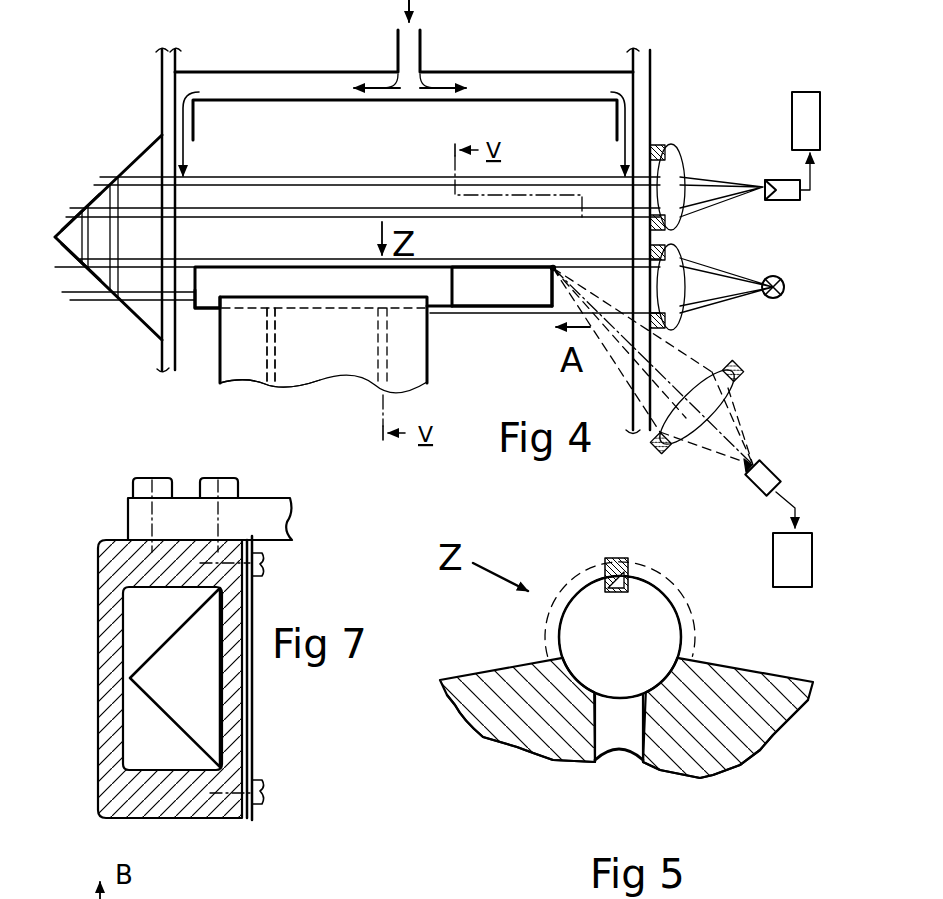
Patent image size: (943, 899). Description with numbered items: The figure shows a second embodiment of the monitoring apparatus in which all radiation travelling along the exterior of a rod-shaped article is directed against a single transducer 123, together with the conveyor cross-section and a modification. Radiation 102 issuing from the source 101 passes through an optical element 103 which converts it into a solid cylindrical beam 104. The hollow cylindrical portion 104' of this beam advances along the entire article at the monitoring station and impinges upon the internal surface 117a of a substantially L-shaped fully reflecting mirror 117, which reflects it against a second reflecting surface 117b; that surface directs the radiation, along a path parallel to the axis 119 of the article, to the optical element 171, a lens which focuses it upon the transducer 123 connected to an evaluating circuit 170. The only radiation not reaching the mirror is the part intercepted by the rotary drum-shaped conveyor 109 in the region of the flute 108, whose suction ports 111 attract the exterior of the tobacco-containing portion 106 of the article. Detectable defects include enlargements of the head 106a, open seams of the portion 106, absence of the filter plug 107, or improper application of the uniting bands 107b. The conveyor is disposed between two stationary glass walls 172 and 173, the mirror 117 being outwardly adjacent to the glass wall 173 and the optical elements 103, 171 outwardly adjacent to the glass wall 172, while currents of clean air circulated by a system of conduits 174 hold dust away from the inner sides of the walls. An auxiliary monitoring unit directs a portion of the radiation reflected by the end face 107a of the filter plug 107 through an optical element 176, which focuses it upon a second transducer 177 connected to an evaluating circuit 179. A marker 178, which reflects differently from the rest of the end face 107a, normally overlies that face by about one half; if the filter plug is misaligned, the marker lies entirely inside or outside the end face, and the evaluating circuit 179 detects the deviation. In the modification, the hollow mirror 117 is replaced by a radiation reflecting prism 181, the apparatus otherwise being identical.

In FIG. 4, the fully reflecting mirror 117 is at (72, 108).
In FIG. 4, the internal surface of mirror 117a is at (100, 270).
In FIG. 4, the second reflecting surface 117b is at (86, 206).
In FIG. 4, the glass wall 173 is at (160, 80).
In FIG. 4, the glass wall 172 is at (651, 78).
In FIG. 4, the conduits 174 is at (218, 80).
In FIG. 4, the hollow cylindrical portion of the beam 104' is at (357, 242).
In FIG. 4, the tobacco-containing portion 106 is at (222, 280).
In FIG. 4, the head of tobacco-containing portion 106a is at (192, 305).
In FIG. 4, the flute 108 is at (405, 308).
In FIG. 5, the flute 108 is at (676, 676).
In FIG. 4, the rotary drum-shaped conveyor 109 is at (226, 386).
In FIG. 5, the rotary drum-shaped conveyor 109 is at (754, 722).
In FIG. 4, the suction ports 111 is at (268, 386).
In FIG. 5, the suction ports 111 is at (617, 748).
In FIG. 4, the filter plug 107 is at (502, 286).
In FIG. 5, the filter plug 107 is at (640, 600).
In FIG. 4, the end face of filter plug 107a is at (553, 308).
In FIG. 5, the end face of filter plug 107a is at (647, 605).
In FIG. 4, the uniting bands 107b is at (467, 298).
In FIG. 4, the marker 178 is at (556, 268).
In FIG. 5, the marker 178 is at (612, 562).
In FIG. 4, the solid cylindrical beam 104 is at (653, 366).
In FIG. 4, the optical element 171 is at (673, 165).
In FIG. 4, the transducer 123 is at (793, 202).
In FIG. 4, the evaluating circuit 170 is at (806, 95).
In FIG. 4, the optical element 103 is at (672, 318).
In FIG. 4, the radiation 102 is at (716, 272).
In FIG. 4, the source 101 is at (785, 292).
In FIG. 4, the optical element 176 is at (733, 385).
In FIG. 4, the second transducer 177 is at (778, 470).
In FIG. 4, the evaluating circuit 179 is at (788, 580).
In FIG. 5, the axis of the article 119 is at (585, 633).
In FIG. 7, the radiation reflecting prism 181 is at (205, 689).